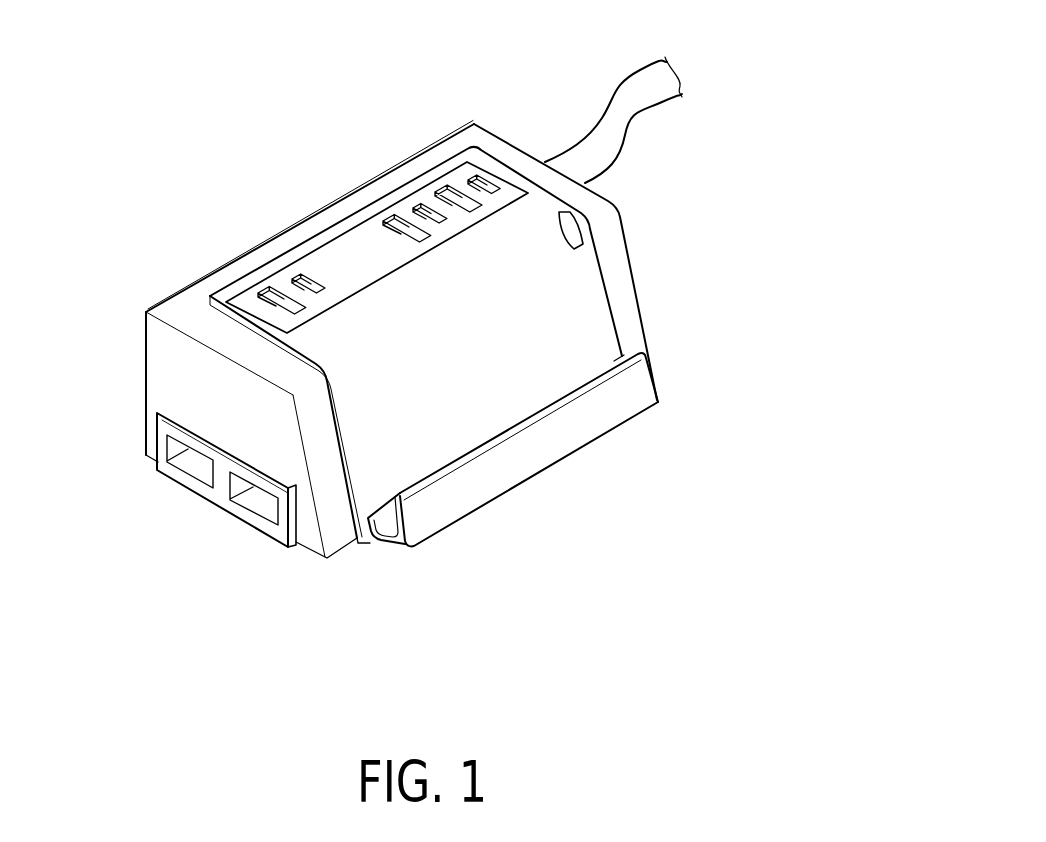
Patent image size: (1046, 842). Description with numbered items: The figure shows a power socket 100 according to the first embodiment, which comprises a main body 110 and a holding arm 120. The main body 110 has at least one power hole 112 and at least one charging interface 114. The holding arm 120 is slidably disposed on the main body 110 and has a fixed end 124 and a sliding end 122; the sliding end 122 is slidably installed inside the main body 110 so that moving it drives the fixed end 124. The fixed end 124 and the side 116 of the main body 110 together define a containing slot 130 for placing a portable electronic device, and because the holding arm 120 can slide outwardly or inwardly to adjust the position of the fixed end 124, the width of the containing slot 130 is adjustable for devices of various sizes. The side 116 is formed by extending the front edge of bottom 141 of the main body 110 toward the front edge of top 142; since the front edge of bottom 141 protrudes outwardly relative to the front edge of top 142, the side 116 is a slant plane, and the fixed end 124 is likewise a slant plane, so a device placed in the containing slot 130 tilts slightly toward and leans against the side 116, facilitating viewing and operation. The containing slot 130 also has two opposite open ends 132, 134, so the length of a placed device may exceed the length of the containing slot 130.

The power socket 100 is at (328, 186).
The main body 110 is at (183, 310).
The power hole 112 is at (482, 188).
The charging interface 114 is at (198, 466).
The side 116 is at (525, 372).
The holding arm 120 is at (577, 418).
The sliding end 122 is at (383, 532).
The fixed end 124 is at (438, 503).
The containing slot 130 is at (487, 437).
The open end 132 is at (392, 526).
The open end 134 is at (616, 360).
The front edge of bottom 141 is at (368, 543).
The front edge of top 142 is at (349, 368).